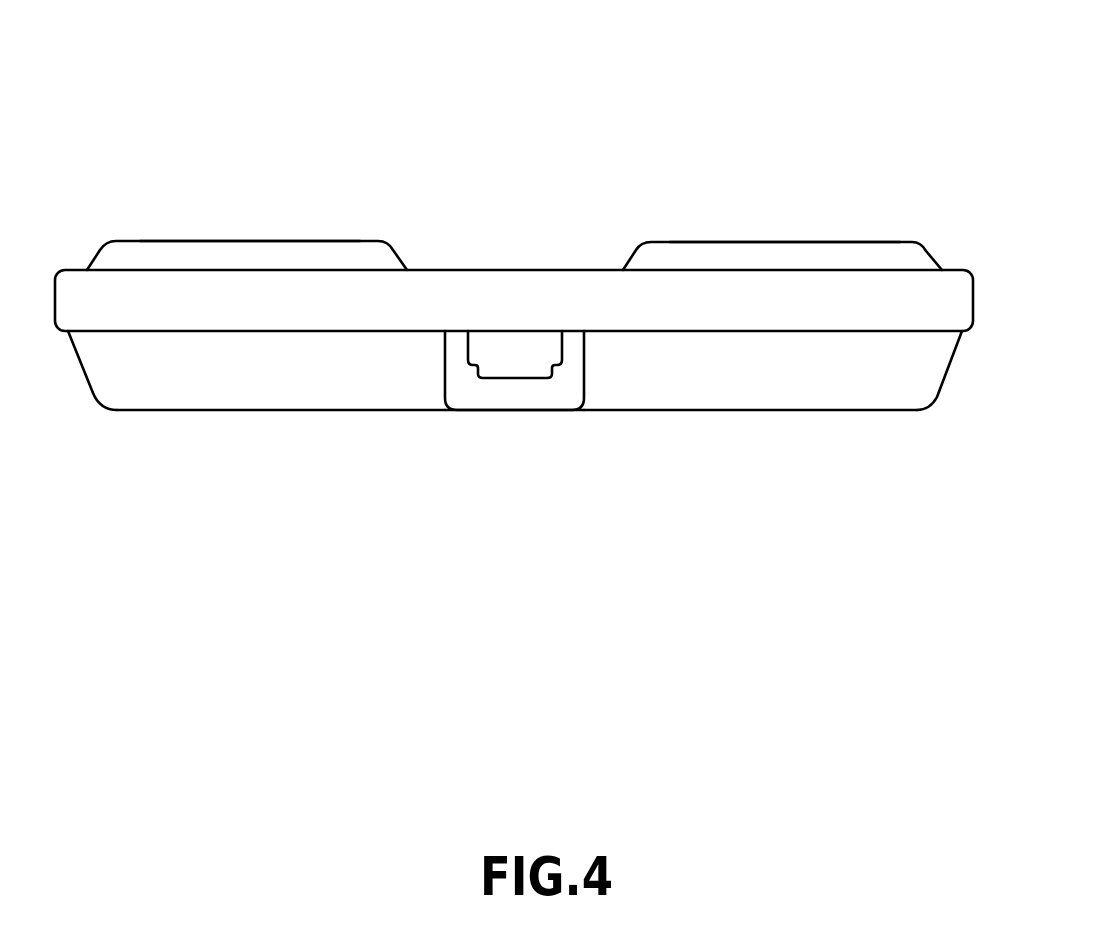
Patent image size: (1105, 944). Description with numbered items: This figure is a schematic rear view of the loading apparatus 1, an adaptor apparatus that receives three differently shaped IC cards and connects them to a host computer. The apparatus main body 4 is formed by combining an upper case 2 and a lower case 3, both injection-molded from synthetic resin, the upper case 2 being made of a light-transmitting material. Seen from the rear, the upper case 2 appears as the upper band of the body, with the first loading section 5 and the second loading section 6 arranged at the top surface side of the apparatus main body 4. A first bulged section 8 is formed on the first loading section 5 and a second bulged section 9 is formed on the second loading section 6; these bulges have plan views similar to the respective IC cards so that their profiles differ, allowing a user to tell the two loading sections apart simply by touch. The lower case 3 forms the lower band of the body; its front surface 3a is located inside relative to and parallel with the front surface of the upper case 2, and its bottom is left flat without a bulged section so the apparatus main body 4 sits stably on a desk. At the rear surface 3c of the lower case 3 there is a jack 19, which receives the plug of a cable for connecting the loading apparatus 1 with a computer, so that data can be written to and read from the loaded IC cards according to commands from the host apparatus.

The loading apparatus 1 is at (984, 98).
The upper case 2 is at (938, 307).
The lower case 3 is at (938, 372).
The front surface 3a is at (762, 410).
The rear surface 3c is at (260, 398).
The apparatus main body 4 is at (1045, 292).
The first loading section 5 is at (797, 218).
The second loading section 6 is at (277, 216).
The first bulged section 8 is at (719, 255).
The second bulged section 9 is at (199, 253).
The jack 19 is at (517, 378).